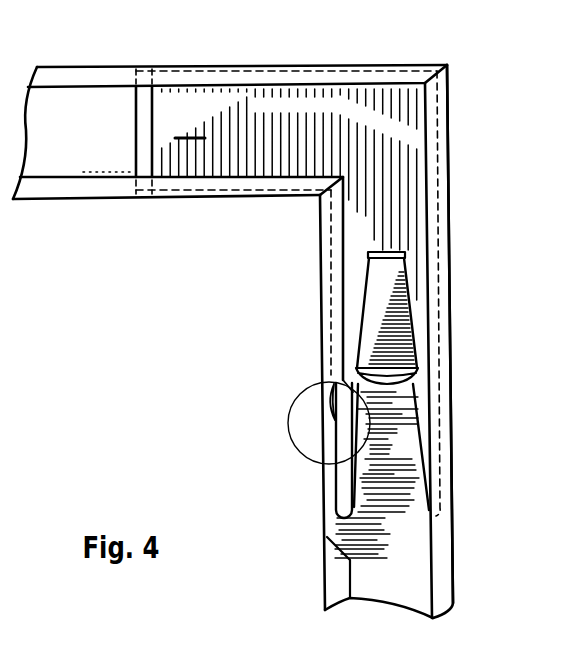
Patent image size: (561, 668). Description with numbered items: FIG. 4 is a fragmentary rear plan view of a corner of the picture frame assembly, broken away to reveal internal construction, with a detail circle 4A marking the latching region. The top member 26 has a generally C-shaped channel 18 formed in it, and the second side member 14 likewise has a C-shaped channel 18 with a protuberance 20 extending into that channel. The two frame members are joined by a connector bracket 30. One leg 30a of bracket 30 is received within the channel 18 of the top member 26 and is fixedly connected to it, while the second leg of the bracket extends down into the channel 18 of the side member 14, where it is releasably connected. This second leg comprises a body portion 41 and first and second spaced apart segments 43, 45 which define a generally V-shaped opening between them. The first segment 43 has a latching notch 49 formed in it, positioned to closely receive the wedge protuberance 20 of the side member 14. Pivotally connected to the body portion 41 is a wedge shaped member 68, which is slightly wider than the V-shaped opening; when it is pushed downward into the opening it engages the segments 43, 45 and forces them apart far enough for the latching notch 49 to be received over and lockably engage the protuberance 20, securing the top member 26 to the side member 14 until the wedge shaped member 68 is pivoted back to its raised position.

The C shaped channel 18 is at (93, 103).
The top member 26 is at (112, 72).
The bracket 30 is at (423, 112).
The leg of bracket 30a is at (189, 124).
The body portion 41 is at (392, 170).
The wedge shaped member 68 is at (392, 276).
The second side member 14 is at (452, 309).
The second segment 45 is at (420, 383).
The latching notch 49 is at (328, 410).
The protuberance 20 is at (327, 415).
The first segment 43 is at (340, 492).
The detail circle 4A is at (303, 399).